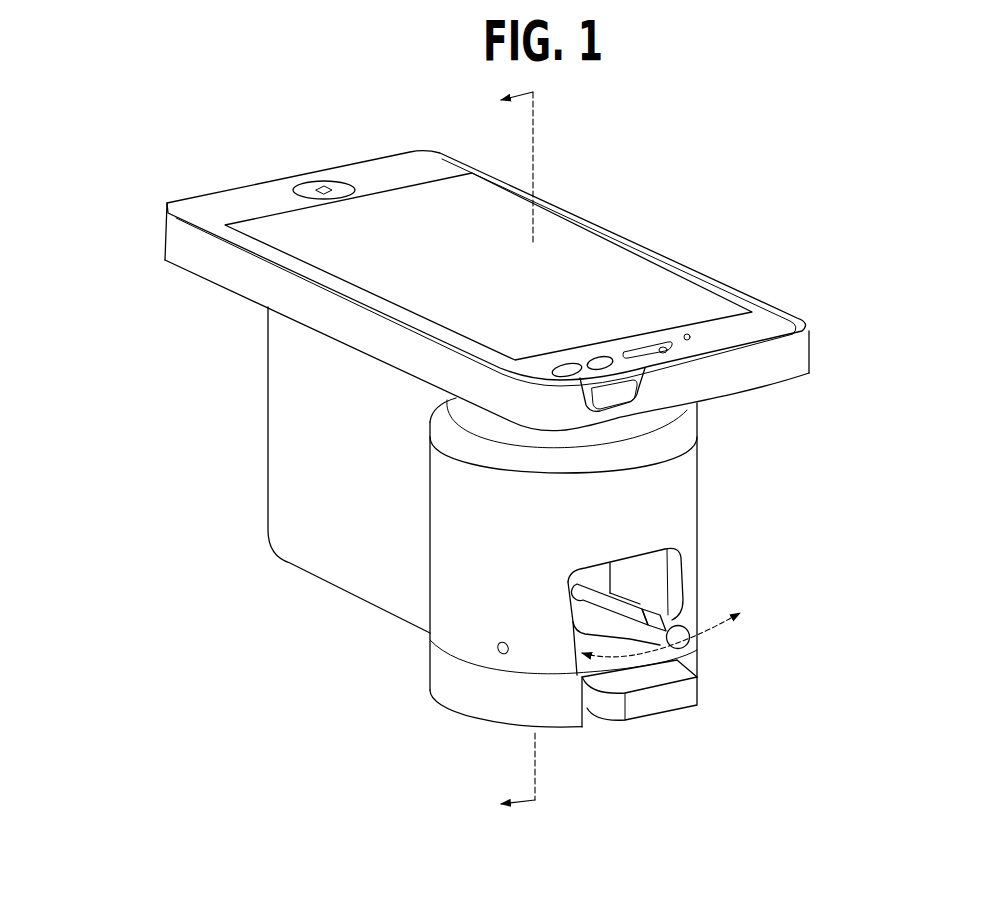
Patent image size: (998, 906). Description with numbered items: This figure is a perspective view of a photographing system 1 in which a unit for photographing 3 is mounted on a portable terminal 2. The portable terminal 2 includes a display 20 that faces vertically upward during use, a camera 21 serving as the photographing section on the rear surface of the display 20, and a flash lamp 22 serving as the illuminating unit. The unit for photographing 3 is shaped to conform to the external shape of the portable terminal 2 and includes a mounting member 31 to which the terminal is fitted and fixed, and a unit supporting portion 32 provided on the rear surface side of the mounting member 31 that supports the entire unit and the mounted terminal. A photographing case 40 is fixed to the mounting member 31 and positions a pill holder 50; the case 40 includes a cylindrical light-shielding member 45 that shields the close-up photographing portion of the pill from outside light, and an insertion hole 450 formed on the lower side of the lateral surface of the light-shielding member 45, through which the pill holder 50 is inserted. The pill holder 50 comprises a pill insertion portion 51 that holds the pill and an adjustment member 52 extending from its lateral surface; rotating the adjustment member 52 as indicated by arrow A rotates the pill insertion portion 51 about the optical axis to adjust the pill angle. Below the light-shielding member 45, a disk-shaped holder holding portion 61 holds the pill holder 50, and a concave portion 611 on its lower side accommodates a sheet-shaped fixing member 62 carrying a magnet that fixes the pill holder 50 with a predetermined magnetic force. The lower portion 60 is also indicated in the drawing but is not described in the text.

The photographing system 1 is at (875, 199).
The portable terminal 2 is at (405, 167).
The unit for photographing 3 is at (145, 223).
The display 20 is at (583, 240).
The camera 21 is at (566, 365).
The flash lamp 22 is at (603, 361).
The mounting member 31 is at (812, 347).
The unit supporting portion 32 is at (283, 488).
The photographing case 40 is at (748, 451).
The light-shielding member 45 is at (683, 497).
The insertion hole 450 is at (685, 545).
The pill holder 50 is at (665, 616).
The pill insertion portion 51 is at (577, 676).
The adjustment member 52 is at (690, 620).
The base portion 60 is at (411, 677).
The holder holding portion 61 is at (465, 702).
The concave portion 611 is at (592, 722).
The fixing member 62 is at (689, 718).